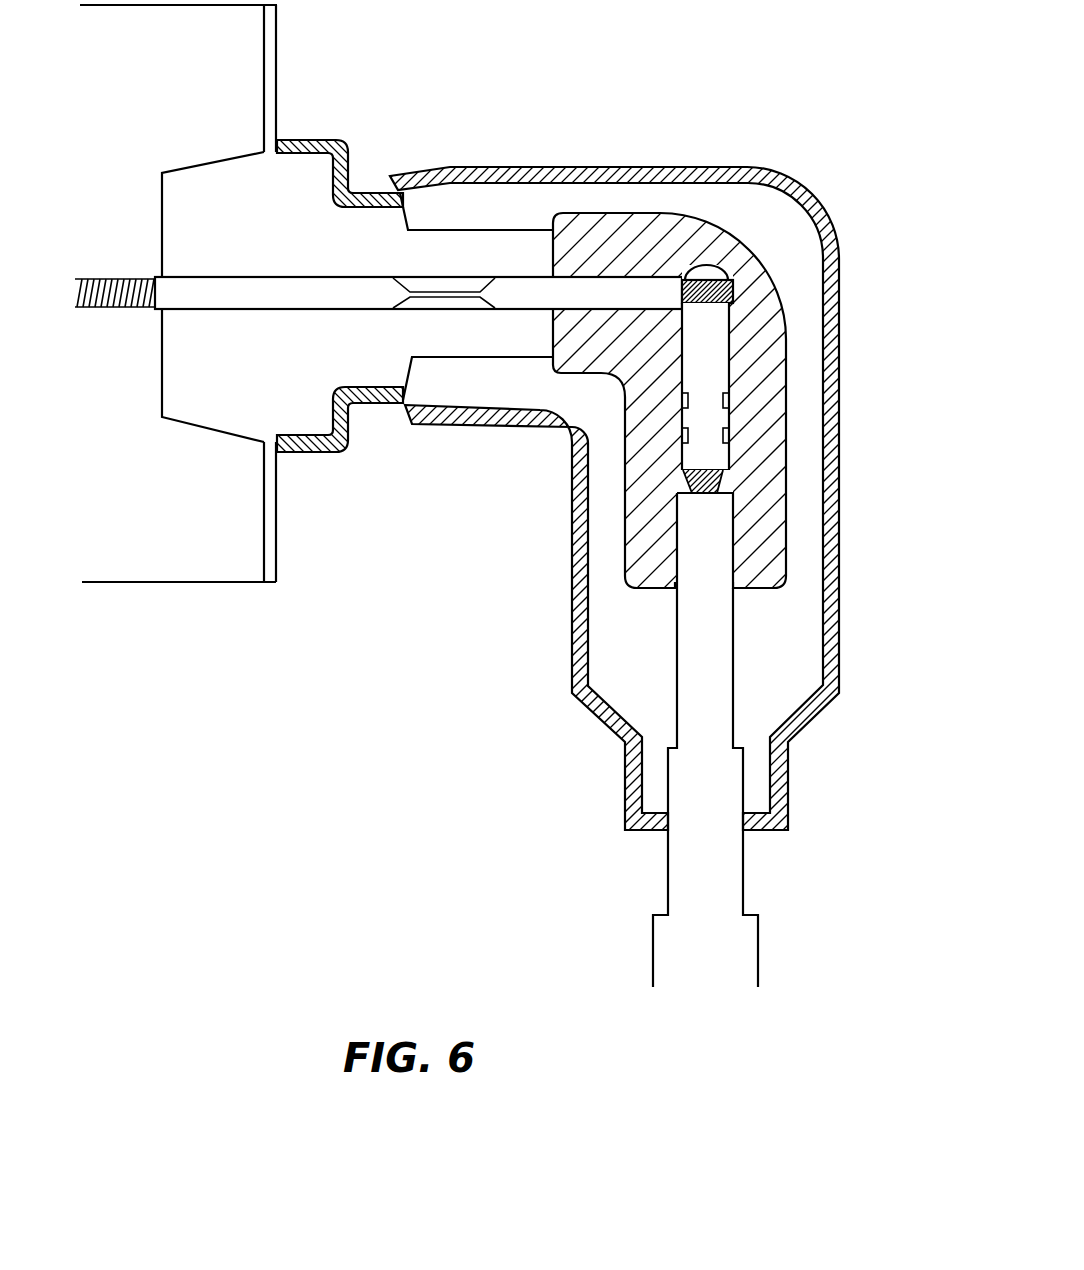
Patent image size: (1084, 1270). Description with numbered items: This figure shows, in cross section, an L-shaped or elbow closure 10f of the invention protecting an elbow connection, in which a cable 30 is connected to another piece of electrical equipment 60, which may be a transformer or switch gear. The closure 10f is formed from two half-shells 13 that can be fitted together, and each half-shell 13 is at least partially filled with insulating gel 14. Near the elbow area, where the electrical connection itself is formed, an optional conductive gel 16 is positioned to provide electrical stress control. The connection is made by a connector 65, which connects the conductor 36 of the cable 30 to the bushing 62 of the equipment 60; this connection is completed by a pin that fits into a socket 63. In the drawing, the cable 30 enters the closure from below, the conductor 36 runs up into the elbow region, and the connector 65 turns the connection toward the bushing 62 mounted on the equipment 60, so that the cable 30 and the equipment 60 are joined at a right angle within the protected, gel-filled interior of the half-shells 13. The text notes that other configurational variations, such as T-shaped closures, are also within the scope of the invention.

The electrical equipment 60 is at (277, 50).
The bushing 62 is at (313, 182).
The socket 63 is at (507, 277).
The connector 65 is at (713, 383).
The conductor 36 is at (740, 481).
The conductive gel 16 is at (777, 570).
The insulating gel 14 is at (787, 700).
The half-shell 13 is at (788, 813).
The cable 30 is at (728, 968).
The elbow closure 10f is at (460, 806).